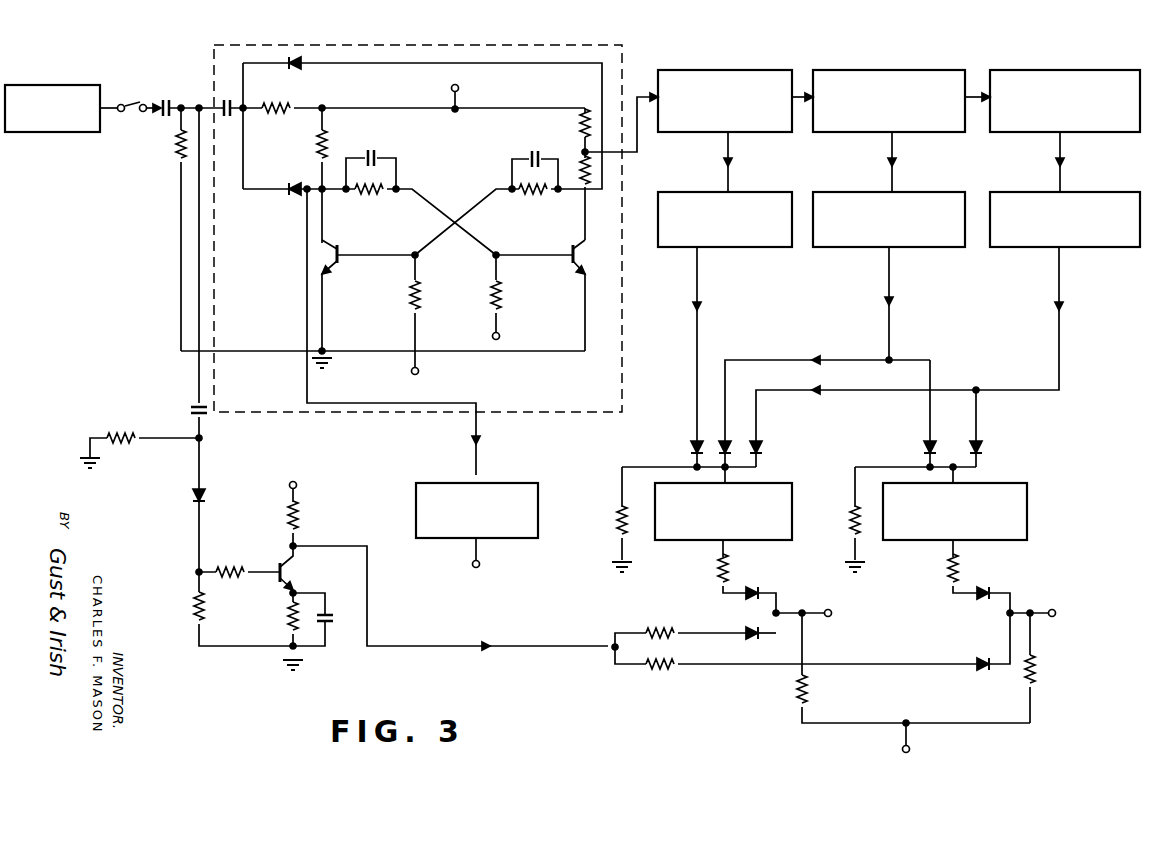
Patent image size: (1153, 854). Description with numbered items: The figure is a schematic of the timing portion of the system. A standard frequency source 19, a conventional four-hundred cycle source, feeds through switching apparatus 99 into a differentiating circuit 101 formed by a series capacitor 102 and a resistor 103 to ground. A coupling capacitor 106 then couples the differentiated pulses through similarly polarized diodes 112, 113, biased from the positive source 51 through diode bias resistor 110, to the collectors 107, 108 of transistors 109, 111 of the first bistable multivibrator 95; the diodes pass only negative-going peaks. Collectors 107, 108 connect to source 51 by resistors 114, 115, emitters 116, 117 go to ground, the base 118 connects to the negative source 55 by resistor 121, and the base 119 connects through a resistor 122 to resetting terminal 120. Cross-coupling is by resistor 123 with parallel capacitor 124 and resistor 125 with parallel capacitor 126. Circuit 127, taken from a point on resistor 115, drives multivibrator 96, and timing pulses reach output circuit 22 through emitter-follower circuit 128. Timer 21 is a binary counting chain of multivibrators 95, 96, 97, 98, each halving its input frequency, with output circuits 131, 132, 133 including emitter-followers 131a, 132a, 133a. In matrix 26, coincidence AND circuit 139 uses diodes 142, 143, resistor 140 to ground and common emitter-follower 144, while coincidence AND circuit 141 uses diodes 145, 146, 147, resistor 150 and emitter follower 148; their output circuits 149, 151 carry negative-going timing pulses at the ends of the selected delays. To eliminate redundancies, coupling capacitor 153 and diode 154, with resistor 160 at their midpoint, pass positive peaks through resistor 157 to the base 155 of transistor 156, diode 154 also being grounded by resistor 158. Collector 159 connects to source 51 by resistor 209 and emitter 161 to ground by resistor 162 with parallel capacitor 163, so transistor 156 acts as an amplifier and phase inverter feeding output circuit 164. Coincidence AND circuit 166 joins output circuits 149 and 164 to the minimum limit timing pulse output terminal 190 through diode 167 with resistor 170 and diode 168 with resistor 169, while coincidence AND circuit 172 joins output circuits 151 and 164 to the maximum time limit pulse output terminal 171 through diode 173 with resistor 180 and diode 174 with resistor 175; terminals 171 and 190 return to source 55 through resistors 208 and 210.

The standard frequency source 19 is at (47, 88).
The switching apparatus 99 is at (121, 100).
The differentiating circuit 101 is at (161, 90).
The capacitor 102 is at (164, 116).
The resistor 103 is at (178, 153).
The coupling capacitor 106 is at (226, 116).
The diode bias resistor 110 is at (278, 102).
The diode 113 is at (292, 68).
The diode 112 is at (292, 182).
The resistor 114 is at (326, 140).
The bistable multivibrator 95 is at (612, 49).
The positive 27.5 volt source 51 is at (297, 483).
The capacitor 126 is at (372, 156).
The resistor 125 is at (368, 195).
The capacitor 124 is at (534, 156).
The resistor 123 is at (528, 195).
The resistor 115 is at (582, 133).
The circuit 127 is at (637, 152).
The collector 107 is at (362, 285).
The transistor 109 is at (329, 266).
The base 118 is at (341, 246).
The emitter 116 is at (327, 270).
The collector 108 is at (551, 286).
The transistor 111 is at (598, 264).
The base 119 is at (567, 246).
The emitter 117 is at (574, 272).
The resistor 121 is at (407, 296).
The resistor 122 is at (488, 296).
The resetting terminal 120 is at (492, 336).
The negative 27.5 volt source 55 is at (902, 751).
The emitter-follower circuit 128 is at (498, 484).
The output circuit 22 is at (480, 563).
The timer 21 is at (888, 52).
The bistable multivibrator 96 is at (739, 70).
The bistable multivibrator 97 is at (921, 70).
The bistable multivibrator 98 is at (1094, 70).
The output circuit 131 is at (732, 157).
The output circuit 132 is at (895, 157).
The output circuit 133 is at (1065, 157).
The emitter-follower circuit 131a is at (733, 250).
The emitter-follower circuit 132a is at (895, 250).
The emitter-follower circuit 133a is at (1078, 250).
The diode 145 is at (692, 452).
The diode 146 is at (728, 444).
The diode 147 is at (761, 445).
The diode 142 is at (928, 446).
The diode 143 is at (979, 450).
The coincidence AND circuit 139 is at (1014, 445).
The coincidence AND circuit 141 is at (647, 451).
The matrix 26 is at (1086, 474).
The resistor 150 is at (616, 517).
The resistor 140 is at (855, 520).
The emitter follower 148 is at (790, 497).
The emitter-follower 144 is at (1027, 509).
The output circuit 151 is at (720, 548).
The resistor 180 is at (719, 568).
The diode 173 is at (752, 587).
The output circuit 149 is at (950, 548).
The resistor 170 is at (949, 568).
The diode 167 is at (985, 587).
The maximum time limit pulse output terminal 171 is at (828, 617).
The coincidence AND circuit 172 is at (724, 620).
The output circuit 164 is at (368, 578).
The resistor 175 is at (660, 627).
The diode 174 is at (757, 640).
The resistor 169 is at (661, 672).
The diode 168 is at (986, 672).
The minimum limit timing pulse output terminal 190 is at (1052, 617).
The coincidence AND circuit 166 is at (969, 637).
The resistor 210 is at (1034, 676).
The resistor 208 is at (797, 695).
The coupling capacitor 153 is at (196, 406).
The resistor 160 is at (123, 430).
The diode 154 is at (195, 490).
The resistor 157 is at (238, 566).
The resistor 158 is at (192, 597).
The base 155 is at (288, 566).
The transistor 156 is at (324, 581).
The collector 159 is at (288, 555).
The emitter 161 is at (285, 588).
The resistor 209 is at (300, 517).
The resistor 162 is at (292, 627).
The capacitor 163 is at (330, 620).